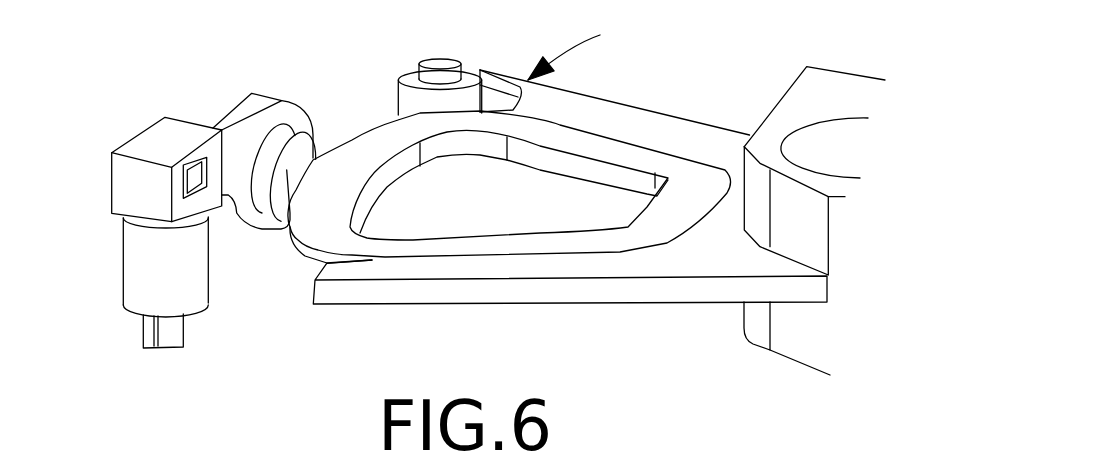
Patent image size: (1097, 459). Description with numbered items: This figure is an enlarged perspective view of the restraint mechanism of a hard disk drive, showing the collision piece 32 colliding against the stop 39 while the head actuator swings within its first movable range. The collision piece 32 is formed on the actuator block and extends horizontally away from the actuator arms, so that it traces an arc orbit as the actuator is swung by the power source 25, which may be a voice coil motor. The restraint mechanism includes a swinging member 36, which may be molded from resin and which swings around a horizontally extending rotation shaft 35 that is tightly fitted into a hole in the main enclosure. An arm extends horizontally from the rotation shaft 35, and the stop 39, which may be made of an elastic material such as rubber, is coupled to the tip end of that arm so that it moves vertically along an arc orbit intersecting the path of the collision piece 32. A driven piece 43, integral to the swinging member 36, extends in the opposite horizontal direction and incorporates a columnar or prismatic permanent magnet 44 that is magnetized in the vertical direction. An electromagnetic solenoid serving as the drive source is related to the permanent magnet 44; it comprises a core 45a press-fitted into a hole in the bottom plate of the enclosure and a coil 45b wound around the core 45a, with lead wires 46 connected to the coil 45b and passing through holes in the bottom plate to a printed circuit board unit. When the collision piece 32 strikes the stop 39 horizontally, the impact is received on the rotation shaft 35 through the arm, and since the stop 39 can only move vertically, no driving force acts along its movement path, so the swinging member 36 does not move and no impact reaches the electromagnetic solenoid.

The power source 25 is at (557, 253).
The collision piece 32 is at (527, 82).
The rotation shaft 35 is at (278, 212).
The swinging member 36 is at (413, 173).
The stop 39 is at (403, 93).
The driven piece 43 is at (215, 115).
The permanent magnet 44 is at (198, 172).
The core 45a is at (144, 332).
The coil 45b is at (133, 270).
The lead wires 46 is at (168, 346).